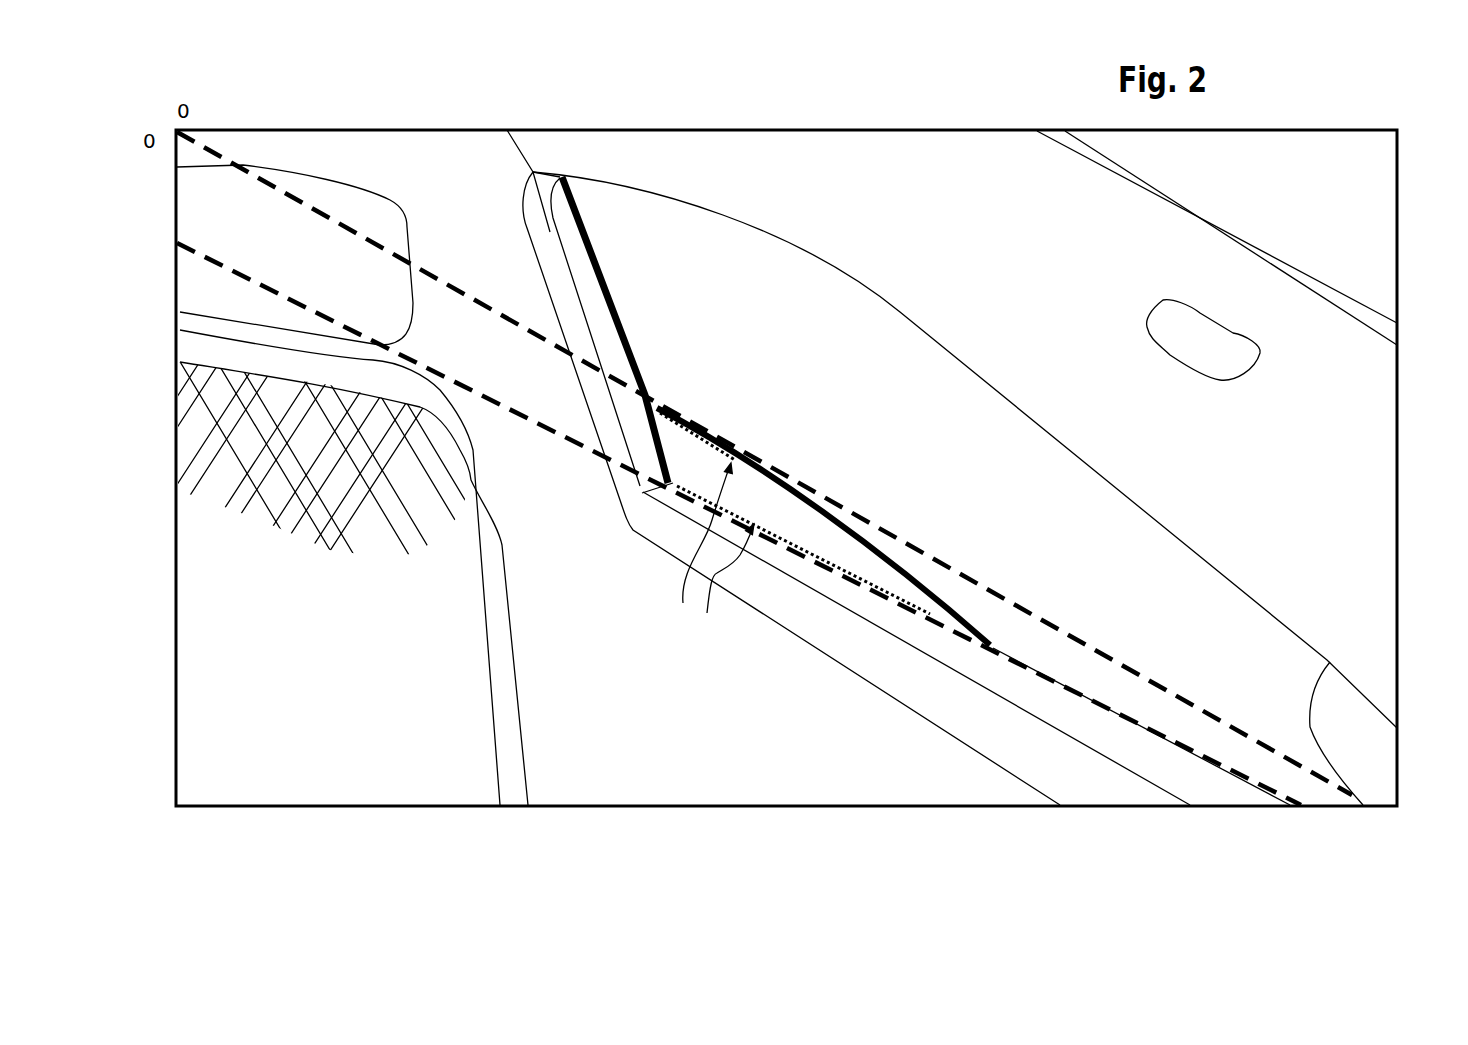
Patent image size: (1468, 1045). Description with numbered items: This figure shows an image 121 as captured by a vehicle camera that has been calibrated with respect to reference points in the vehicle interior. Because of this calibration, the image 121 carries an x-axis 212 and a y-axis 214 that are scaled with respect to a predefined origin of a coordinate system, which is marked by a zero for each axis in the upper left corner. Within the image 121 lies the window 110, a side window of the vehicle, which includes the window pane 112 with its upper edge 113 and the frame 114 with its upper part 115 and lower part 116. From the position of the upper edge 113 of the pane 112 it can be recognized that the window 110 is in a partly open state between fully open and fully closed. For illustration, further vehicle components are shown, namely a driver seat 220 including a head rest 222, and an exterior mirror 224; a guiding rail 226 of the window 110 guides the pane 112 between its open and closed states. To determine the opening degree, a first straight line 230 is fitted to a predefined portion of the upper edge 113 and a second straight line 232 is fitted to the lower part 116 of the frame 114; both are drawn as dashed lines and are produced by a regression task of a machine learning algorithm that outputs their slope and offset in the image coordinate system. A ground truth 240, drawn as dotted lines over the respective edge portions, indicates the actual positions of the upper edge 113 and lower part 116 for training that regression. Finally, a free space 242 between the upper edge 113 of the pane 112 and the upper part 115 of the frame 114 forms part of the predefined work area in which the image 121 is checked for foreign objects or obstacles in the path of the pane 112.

The window 110 is at (1160, 493).
The window pane 112 is at (805, 523).
The upper edge 113 is at (673, 412).
The frame 114 is at (790, 238).
The upper part 115 is at (858, 285).
The lower part 116 is at (955, 627).
The image 121 is at (387, 120).
The x-axis 212 is at (640, 130).
The y-axis 214 is at (177, 227).
The driver seat 220 is at (228, 622).
The head rest 222 is at (213, 303).
The exterior mirror 224 is at (1380, 775).
The guiding rail 226 is at (612, 281).
The first straight line 230 is at (892, 535).
The second straight line 232 is at (532, 422).
The ground truth 240 is at (713, 551).
The free space 242 is at (923, 368).